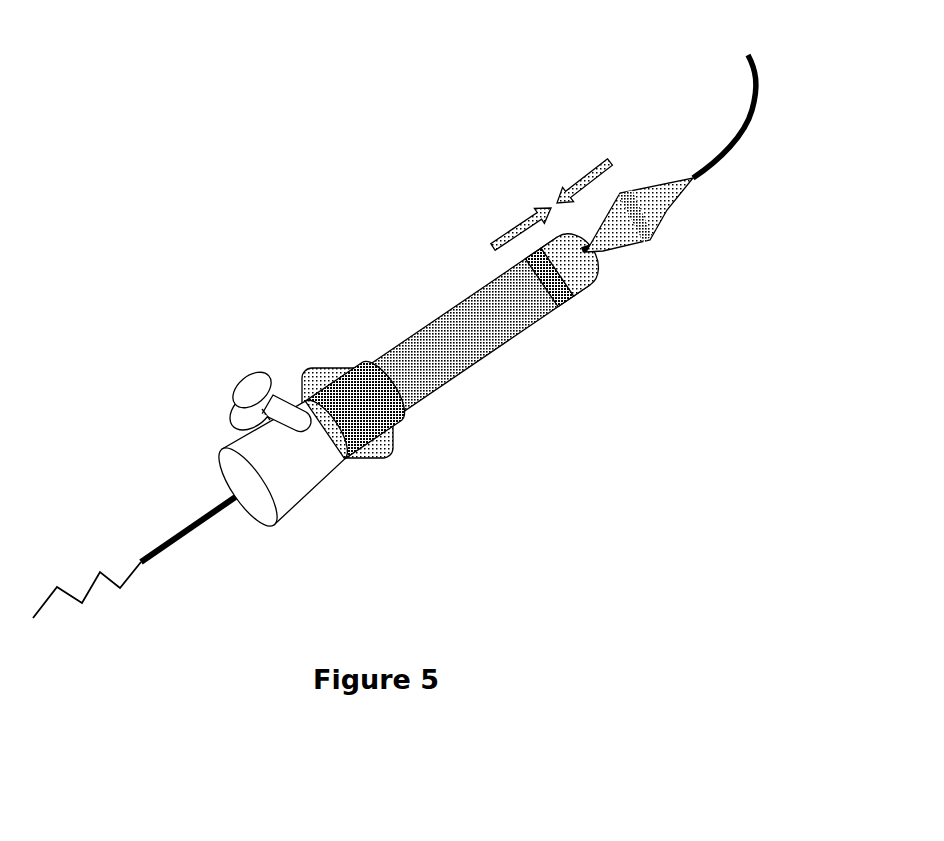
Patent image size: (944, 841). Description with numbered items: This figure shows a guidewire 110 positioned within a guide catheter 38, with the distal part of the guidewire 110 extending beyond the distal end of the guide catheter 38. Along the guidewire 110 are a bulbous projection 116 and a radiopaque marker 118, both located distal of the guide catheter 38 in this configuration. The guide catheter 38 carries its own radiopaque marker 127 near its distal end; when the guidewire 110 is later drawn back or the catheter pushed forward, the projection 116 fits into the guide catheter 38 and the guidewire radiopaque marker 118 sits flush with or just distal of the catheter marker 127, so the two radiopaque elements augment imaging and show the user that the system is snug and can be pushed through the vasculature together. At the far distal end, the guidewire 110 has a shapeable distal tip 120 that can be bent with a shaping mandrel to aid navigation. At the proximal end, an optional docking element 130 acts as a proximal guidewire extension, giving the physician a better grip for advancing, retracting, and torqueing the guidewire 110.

The guidewire 110 is at (273, 563).
The guide catheter 38 is at (473, 362).
The radiopaque marker 127 is at (560, 307).
The radiopaque marker 118 is at (648, 243).
The projection 116 is at (665, 212).
The shapeable distal tip 120 is at (742, 142).
The docking element 130 is at (82, 602).